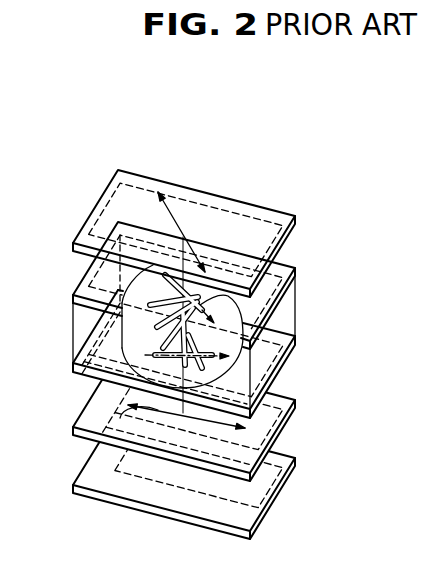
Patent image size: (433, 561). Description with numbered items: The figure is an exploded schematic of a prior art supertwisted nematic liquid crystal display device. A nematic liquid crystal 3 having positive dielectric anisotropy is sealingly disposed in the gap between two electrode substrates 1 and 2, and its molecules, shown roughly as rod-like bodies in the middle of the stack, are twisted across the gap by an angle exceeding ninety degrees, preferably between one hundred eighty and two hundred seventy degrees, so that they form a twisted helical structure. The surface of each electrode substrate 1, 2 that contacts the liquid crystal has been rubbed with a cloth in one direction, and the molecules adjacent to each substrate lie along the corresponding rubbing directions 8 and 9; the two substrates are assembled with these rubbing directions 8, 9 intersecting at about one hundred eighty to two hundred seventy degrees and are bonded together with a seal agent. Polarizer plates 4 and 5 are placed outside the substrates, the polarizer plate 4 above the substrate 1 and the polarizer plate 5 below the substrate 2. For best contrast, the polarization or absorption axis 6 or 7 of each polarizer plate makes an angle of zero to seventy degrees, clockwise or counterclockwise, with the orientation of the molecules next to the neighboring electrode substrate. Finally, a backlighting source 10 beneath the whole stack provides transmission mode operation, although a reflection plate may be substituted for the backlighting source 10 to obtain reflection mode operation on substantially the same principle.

The electrode substrate 1 is at (298, 280).
The electrode substrate 2 is at (293, 348).
The nematic liquid crystal 3 is at (156, 321).
The polarizer plate 4 is at (298, 222).
The polarizer plate 5 is at (287, 427).
The polarization axis 6 is at (170, 212).
The polarization axis 7 is at (120, 417).
The rubbing direction 8 is at (207, 310).
The rubbing direction 9 is at (224, 364).
The backlighting source 10 is at (277, 490).